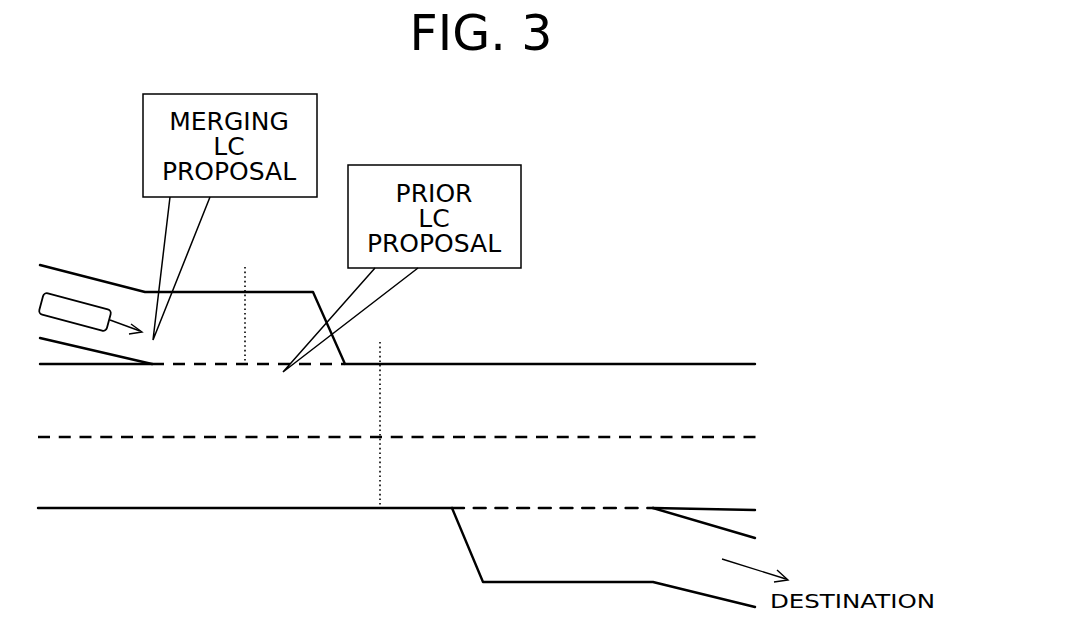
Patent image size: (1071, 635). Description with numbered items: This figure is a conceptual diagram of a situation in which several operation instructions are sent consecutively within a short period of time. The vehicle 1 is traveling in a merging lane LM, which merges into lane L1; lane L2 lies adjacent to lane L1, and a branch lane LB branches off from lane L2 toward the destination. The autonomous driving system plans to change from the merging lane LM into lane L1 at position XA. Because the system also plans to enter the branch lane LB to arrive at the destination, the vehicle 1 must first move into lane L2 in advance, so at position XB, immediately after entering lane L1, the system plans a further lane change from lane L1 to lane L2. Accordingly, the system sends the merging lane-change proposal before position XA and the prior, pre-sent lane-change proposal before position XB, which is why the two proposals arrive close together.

The vehicle 1 is at (75, 297).
The merging lane LM is at (231, 341).
The lane L1 is at (330, 418).
The lane L2 is at (465, 487).
The branch lane LB is at (571, 560).
The position XA is at (245, 298).
The position XB is at (382, 411).